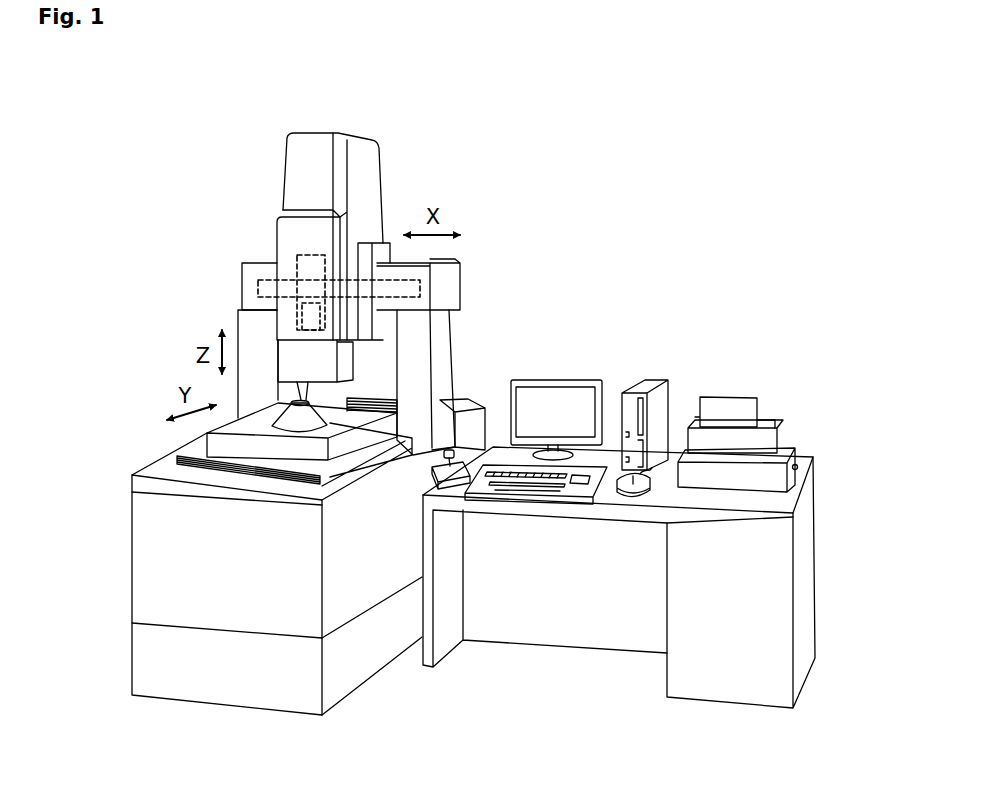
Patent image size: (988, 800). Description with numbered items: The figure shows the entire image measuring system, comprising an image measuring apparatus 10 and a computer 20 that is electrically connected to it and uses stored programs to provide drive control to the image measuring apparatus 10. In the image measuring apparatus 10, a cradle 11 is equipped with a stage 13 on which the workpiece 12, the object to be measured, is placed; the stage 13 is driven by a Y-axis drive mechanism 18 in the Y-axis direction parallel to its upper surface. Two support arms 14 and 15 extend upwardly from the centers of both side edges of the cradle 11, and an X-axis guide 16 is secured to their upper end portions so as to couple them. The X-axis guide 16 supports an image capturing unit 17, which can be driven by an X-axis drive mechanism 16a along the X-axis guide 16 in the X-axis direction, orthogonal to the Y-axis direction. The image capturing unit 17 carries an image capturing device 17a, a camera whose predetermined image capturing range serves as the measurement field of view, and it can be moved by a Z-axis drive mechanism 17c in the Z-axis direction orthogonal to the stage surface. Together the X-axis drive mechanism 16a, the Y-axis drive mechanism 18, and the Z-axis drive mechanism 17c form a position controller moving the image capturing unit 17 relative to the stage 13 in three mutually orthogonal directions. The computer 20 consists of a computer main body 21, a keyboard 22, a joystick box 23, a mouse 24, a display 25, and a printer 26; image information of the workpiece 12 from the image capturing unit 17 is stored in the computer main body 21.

The image measuring apparatus 10 is at (398, 154).
The cradle 11 is at (130, 482).
The workpiece 12 is at (307, 422).
The stage 13 is at (281, 407).
The support arm 14 is at (238, 320).
The support arm 15 is at (452, 345).
The X-axis guide 16 is at (252, 258).
The X-axis drive mechanism 16a is at (418, 290).
The image capturing unit 17 is at (285, 165).
The image capturing device 17a is at (318, 333).
The Z-axis drive mechanism 17c is at (312, 253).
The Y-axis drive mechanism 18 is at (200, 457).
The computer 20 is at (699, 322).
The computer main body 21 is at (647, 380).
The keyboard 22 is at (555, 487).
The joystick box 23 is at (447, 478).
The mouse 24 is at (613, 493).
The display 25 is at (555, 380).
The printer 26 is at (766, 413).